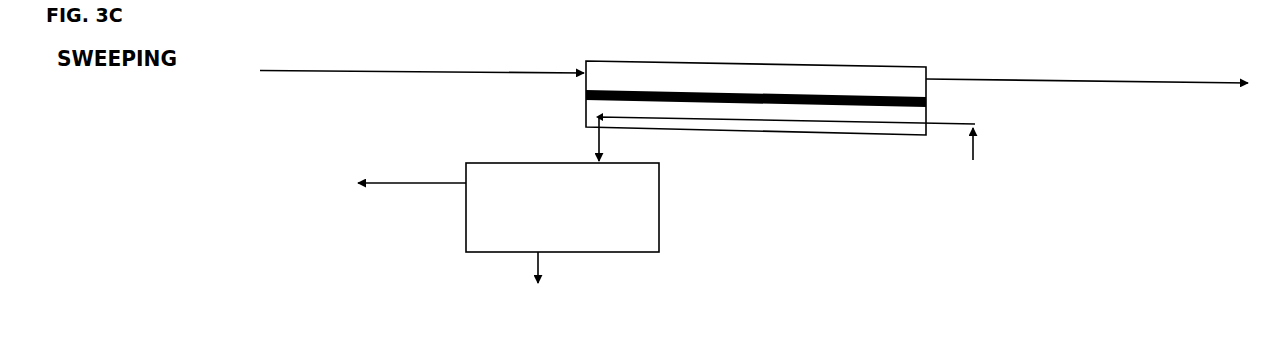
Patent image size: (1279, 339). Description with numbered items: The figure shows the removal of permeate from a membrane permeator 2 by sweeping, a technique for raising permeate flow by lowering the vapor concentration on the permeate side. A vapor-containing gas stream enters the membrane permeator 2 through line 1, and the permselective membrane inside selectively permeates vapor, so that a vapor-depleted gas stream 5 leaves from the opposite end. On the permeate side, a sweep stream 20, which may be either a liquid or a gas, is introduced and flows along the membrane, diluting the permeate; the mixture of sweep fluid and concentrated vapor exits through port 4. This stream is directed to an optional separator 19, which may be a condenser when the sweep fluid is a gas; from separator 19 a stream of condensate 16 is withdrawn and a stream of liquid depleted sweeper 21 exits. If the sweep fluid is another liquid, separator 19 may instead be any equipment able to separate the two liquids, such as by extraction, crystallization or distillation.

The line 1 is at (416, 54).
The membrane permeator 2 is at (756, 83).
The port 4 is at (761, 137).
The vapor-depleted gas stream 5 is at (1087, 64).
The stream of condensate 16 is at (514, 272).
The separator 19 is at (562, 207).
The sweep stream 20 is at (983, 164).
The stream of liquid depleted sweeper 21 is at (411, 162).